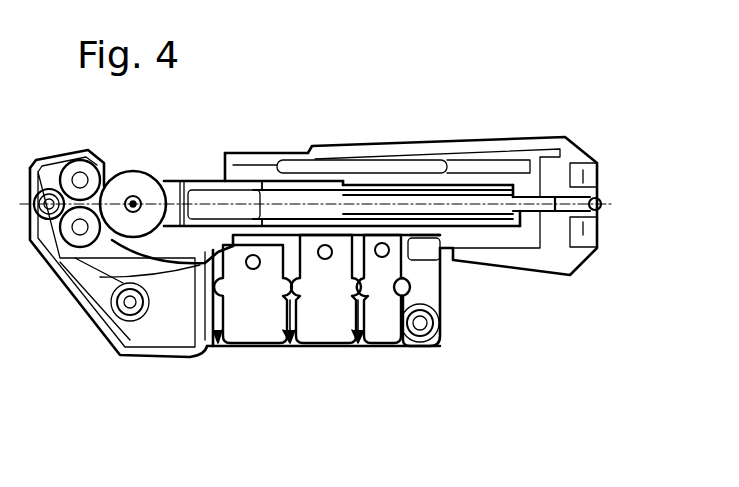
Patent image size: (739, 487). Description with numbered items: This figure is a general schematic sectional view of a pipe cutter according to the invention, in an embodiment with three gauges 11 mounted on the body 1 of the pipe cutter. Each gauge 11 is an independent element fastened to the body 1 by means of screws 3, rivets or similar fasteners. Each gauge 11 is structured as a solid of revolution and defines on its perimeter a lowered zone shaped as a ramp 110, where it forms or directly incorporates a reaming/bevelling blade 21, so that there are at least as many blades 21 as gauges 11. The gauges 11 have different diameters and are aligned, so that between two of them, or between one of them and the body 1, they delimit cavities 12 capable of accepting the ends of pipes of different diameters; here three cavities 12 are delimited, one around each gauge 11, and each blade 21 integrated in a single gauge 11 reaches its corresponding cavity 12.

The body 1 is at (88, 334).
The screws 3 is at (255, 258).
The gauge 11 is at (255, 330).
The cavity 12 is at (212, 346).
The blade 21 is at (417, 346).
The ramp 110 is at (407, 284).